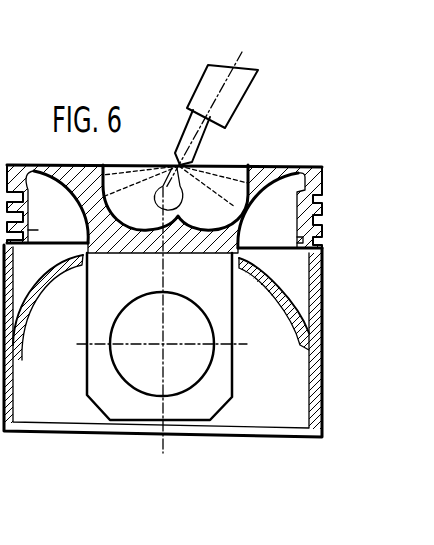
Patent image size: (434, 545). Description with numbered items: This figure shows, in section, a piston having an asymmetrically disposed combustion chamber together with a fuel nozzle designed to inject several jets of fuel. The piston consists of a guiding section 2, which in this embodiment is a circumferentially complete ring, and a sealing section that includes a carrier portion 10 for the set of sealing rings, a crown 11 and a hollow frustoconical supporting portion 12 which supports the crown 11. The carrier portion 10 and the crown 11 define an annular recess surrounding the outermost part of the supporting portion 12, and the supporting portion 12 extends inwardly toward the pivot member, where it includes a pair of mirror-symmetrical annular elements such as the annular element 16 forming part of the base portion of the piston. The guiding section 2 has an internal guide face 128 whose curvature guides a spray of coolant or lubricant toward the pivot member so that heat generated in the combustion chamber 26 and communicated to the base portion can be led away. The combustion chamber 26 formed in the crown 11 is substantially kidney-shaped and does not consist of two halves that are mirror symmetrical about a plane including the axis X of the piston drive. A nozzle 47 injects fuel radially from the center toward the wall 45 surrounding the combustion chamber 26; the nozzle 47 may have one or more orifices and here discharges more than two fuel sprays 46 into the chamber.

The guiding section 2 is at (66, 414).
The carrier portion 10 is at (300, 212).
The crown 11 is at (277, 167).
The hollow frustoconical supporting portion 12 is at (83, 199).
The annular element 16 is at (209, 413).
The combustion chamber 26 is at (175, 197).
The wall 45 is at (131, 231).
The fuel sprays 46 is at (228, 186).
The nozzle 47 is at (244, 90).
The internal guide face 128 is at (53, 286).
The axis X is at (158, 447).